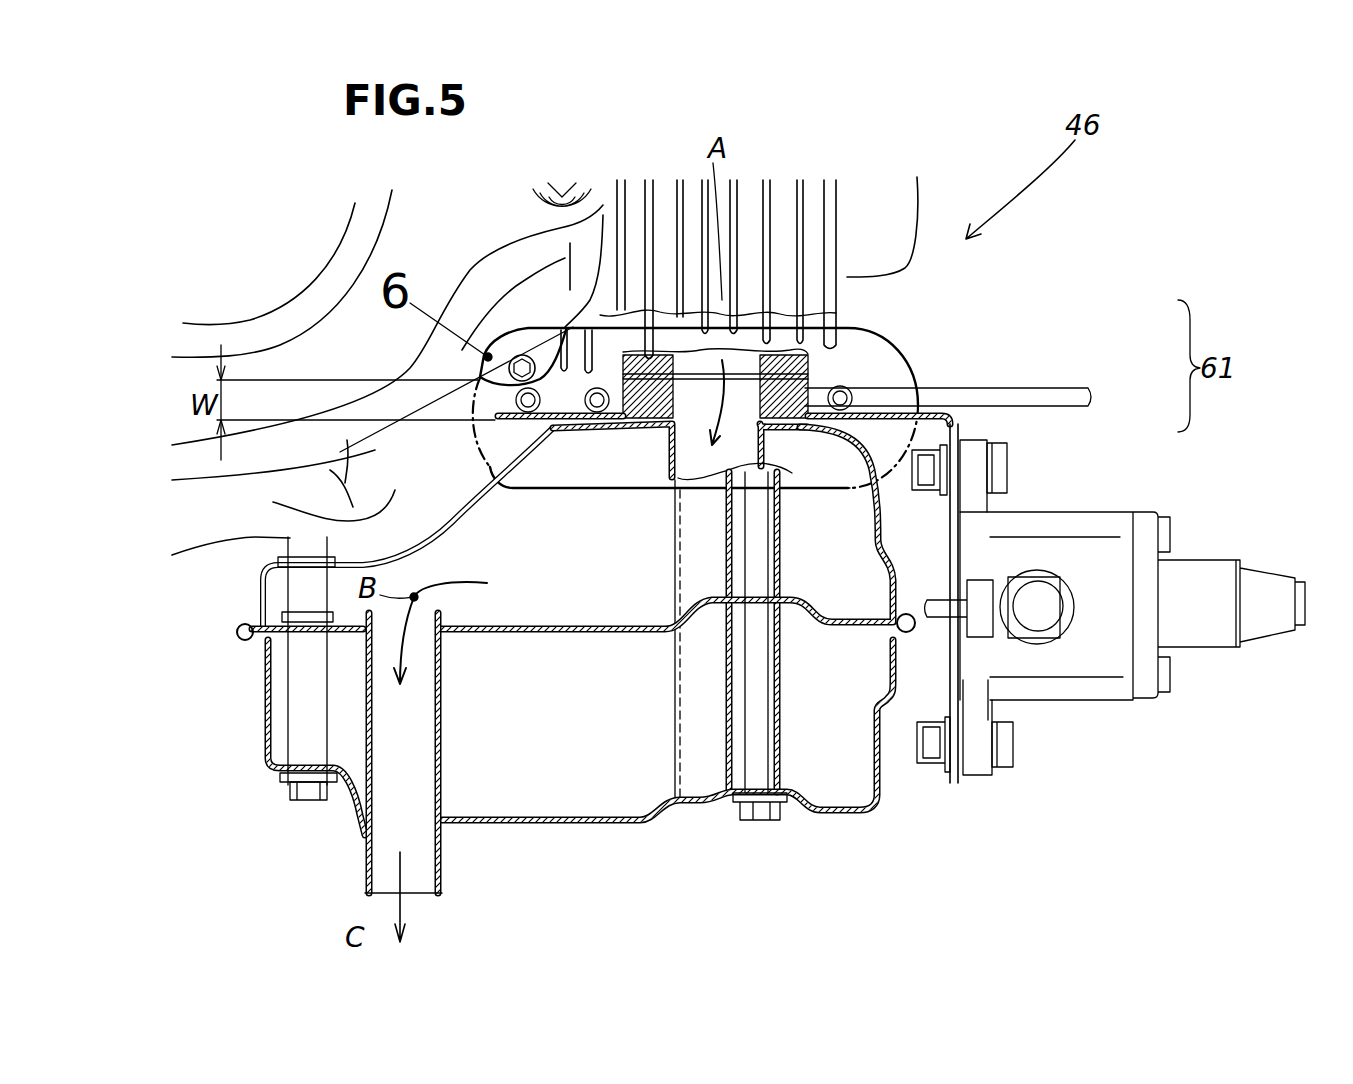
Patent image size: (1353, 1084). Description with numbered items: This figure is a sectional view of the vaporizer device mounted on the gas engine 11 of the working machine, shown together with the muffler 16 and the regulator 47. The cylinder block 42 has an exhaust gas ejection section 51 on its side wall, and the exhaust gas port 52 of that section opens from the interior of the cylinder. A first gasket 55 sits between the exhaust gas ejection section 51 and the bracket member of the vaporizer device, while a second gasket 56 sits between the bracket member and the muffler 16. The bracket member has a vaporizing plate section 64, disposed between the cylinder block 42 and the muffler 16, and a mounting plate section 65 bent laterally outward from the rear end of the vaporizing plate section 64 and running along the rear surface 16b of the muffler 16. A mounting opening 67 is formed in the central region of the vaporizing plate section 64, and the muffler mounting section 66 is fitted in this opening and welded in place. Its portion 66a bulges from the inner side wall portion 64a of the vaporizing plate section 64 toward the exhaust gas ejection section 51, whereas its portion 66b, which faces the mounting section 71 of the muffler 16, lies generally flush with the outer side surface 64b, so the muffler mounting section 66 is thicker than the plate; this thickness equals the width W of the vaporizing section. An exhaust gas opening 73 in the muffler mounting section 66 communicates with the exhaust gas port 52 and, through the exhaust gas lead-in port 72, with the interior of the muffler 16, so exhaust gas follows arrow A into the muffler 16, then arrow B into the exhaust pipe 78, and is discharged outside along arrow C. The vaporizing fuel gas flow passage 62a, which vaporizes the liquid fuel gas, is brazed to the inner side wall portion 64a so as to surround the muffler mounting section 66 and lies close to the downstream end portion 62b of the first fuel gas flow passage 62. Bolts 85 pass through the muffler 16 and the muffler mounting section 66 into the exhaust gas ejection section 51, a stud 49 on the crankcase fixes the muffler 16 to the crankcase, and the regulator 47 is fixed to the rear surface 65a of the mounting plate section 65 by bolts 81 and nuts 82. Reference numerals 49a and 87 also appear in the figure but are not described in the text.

The gas engine 11 is at (305, 250).
The cylinder block 42 is at (748, 305).
The exhaust gas port 52 is at (665, 330).
The vaporizing fuel gas flow passage 62a is at (597, 290).
The exhaust gas opening 73 is at (755, 365).
The vaporizing plate section 64 is at (719, 489).
The exhaust gas ejection section 51 is at (807, 357).
The first gasket 55 is at (800, 345).
The inner side wall portion 64a is at (560, 347).
The outer side surface 64b is at (580, 420).
The mounting opening 67 is at (645, 425).
The muffler mounting section 66 is at (650, 428).
The portion opposed to the exhaust gas ejection section 66a is at (873, 407).
The portion opposed to the mounting section of the muffler 66b is at (808, 430).
The second gasket 56 is at (785, 430).
The exhaust gas lead-in port 72 is at (672, 445).
The mounting section 71 is at (735, 470).
The muffler 16 is at (576, 667).
The rear surface 16b is at (893, 655).
The exhaust pipe 78 is at (442, 756).
The stud 49 is at (242, 713).
The nut 49a is at (307, 800).
The flange 87 is at (283, 785).
The bolt 85 is at (755, 815).
The first fuel gas flow passage 62 is at (965, 614).
The downstream end portion 62b is at (942, 640).
The nut 82 is at (933, 763).
The bolt 81 is at (1000, 468).
The regulator 47 is at (1115, 594).
The mounting plate section 65 is at (1053, 541).
The rear surface 65a is at (960, 672).